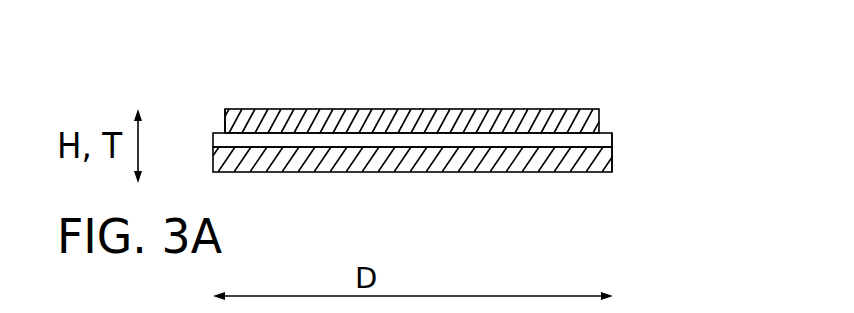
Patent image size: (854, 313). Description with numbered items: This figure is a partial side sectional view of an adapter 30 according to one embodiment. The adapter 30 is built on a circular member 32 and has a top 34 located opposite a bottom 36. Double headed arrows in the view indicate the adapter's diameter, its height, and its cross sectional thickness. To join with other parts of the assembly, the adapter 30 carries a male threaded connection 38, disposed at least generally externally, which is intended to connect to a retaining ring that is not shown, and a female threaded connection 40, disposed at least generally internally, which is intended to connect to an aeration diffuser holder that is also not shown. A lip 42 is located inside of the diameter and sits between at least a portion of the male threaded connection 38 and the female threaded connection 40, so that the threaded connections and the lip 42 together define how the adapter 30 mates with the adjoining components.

The adapter 30 is at (431, 143).
The circular member 32 is at (313, 185).
The top 34 is at (538, 83).
The bottom 36 is at (501, 197).
The male threaded connection 38 is at (225, 112).
The female threaded connection 40 is at (613, 157).
The lip 42 is at (613, 142).